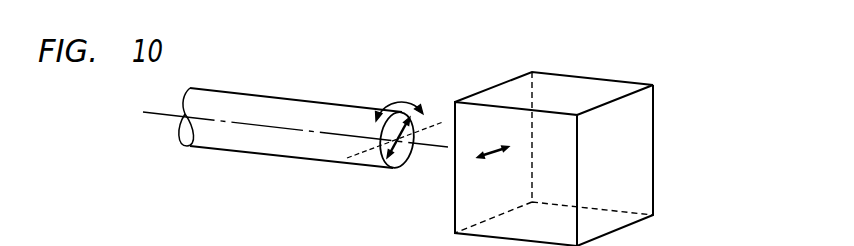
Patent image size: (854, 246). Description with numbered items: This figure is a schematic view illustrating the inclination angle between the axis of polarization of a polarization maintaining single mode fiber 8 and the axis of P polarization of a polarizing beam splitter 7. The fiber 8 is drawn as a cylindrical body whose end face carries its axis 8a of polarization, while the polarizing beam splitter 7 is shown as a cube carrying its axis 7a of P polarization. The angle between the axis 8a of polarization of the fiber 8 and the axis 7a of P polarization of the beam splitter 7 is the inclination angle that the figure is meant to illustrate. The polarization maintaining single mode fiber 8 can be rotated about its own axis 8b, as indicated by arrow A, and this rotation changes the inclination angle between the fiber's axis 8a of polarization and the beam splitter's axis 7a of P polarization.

The polarizing beam splitter 7 is at (592, 82).
The axis of P polarization 7a is at (497, 160).
The polarization maintaining single mode fiber 8 is at (305, 101).
The axis of polarization 8a is at (404, 163).
The own axis of the fiber 8b is at (290, 134).
The arrow A is at (395, 95).